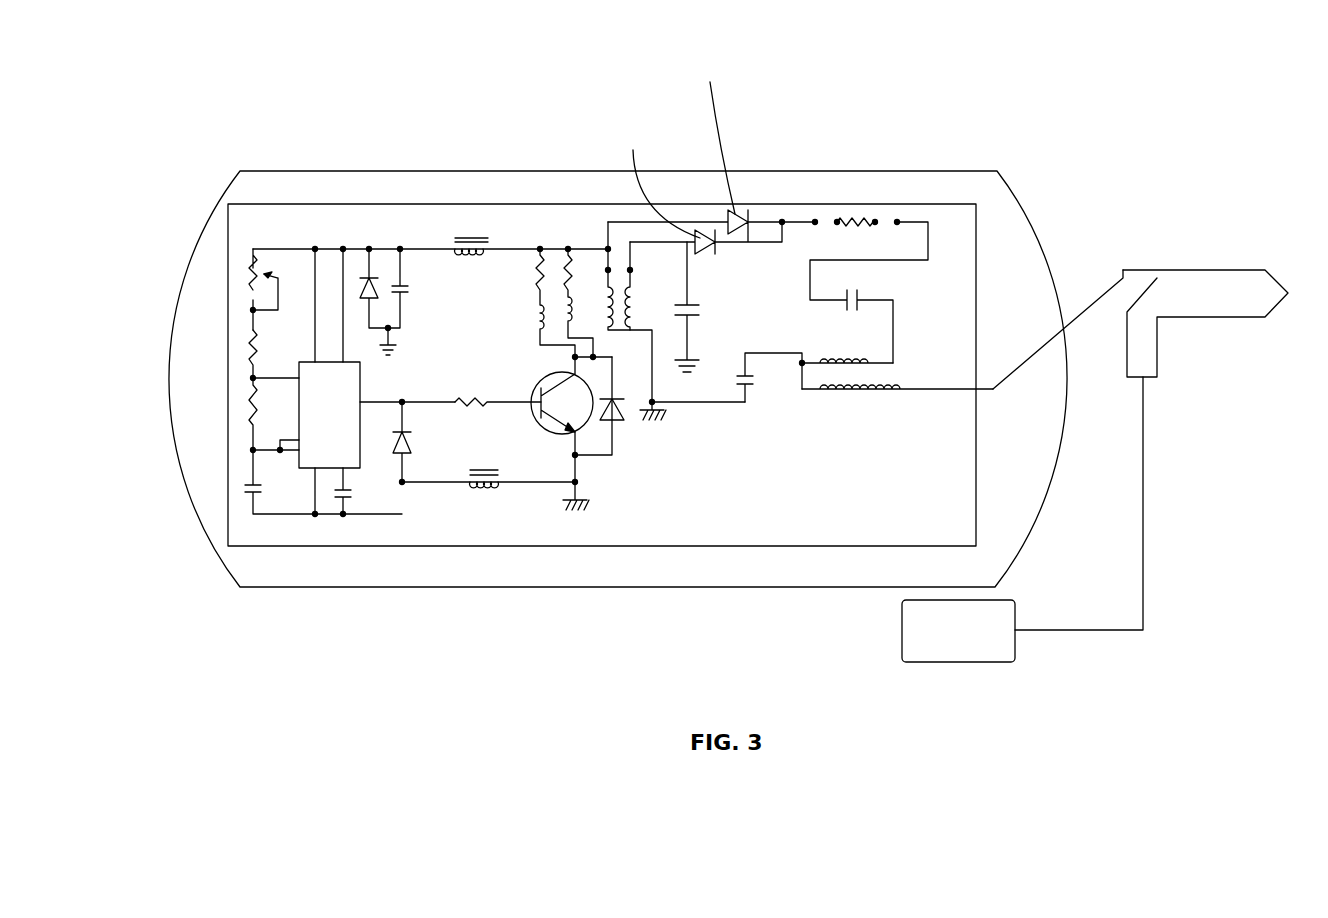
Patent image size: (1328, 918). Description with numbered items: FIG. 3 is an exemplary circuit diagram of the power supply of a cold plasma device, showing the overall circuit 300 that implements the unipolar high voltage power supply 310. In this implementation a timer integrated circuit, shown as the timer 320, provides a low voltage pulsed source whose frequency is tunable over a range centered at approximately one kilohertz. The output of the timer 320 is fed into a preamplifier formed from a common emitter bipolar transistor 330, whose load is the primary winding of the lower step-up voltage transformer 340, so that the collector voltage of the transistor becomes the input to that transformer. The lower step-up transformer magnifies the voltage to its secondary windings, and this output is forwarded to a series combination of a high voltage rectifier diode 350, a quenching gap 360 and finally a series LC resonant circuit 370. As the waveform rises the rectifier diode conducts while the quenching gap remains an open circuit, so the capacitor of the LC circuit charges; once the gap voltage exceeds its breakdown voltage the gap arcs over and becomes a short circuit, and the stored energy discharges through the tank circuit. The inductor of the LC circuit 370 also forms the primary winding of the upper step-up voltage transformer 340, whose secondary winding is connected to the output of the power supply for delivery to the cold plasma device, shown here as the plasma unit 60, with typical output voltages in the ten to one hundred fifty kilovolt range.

The plasma generating circuit 300 is at (268, 92).
The unipolar high voltage power supply 310 is at (966, 170).
The 555 timer 320 is at (320, 470).
The common emitter bipolar transistor 330 is at (585, 425).
The step-up voltage transformer 340 is at (592, 297).
The high voltage rectifier diode 350 is at (745, 212).
The quenching gap 360 is at (858, 222).
The series LC resonant circuit 370 is at (896, 335).
The plasma unit 60 is at (1210, 270).